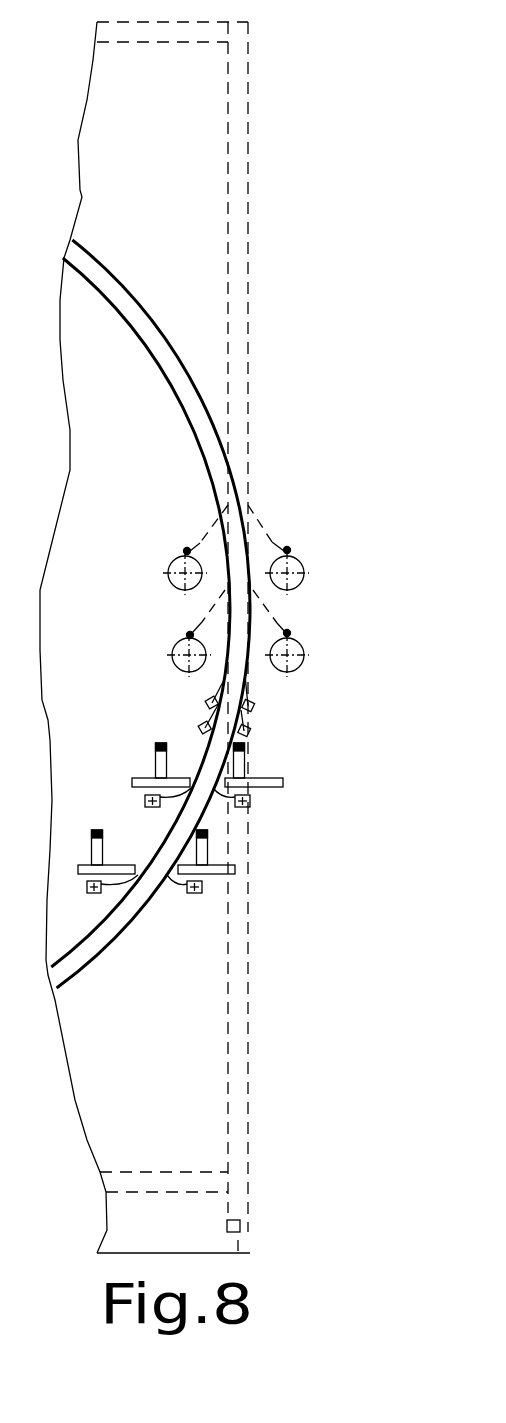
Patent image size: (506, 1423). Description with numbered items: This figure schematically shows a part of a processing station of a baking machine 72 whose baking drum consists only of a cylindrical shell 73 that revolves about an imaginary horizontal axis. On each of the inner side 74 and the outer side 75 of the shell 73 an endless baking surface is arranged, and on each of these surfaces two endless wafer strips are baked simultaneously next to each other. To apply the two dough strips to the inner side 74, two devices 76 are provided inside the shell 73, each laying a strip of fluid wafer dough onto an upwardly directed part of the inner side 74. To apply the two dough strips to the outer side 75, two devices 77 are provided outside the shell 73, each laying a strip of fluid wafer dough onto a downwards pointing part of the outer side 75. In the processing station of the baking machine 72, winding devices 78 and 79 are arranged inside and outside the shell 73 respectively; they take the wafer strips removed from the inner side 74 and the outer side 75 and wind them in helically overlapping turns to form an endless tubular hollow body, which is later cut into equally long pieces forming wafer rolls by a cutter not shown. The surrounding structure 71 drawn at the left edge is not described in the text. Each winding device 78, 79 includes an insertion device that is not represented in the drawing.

The vehicle body structure 71 is at (125, 637).
The baking machine 72 is at (107, 29).
The cylindrical shell 73 is at (127, 601).
The inner side of the shell 74 is at (97, 288).
The outer side of the shell 75 is at (45, 233).
The dough-applying device inside the shell 76 is at (140, 760).
The dough-applying device outside the shell 77 is at (257, 772).
The winding device inside the shell 78 is at (162, 562).
The winding device outside the shell 79 is at (308, 557).